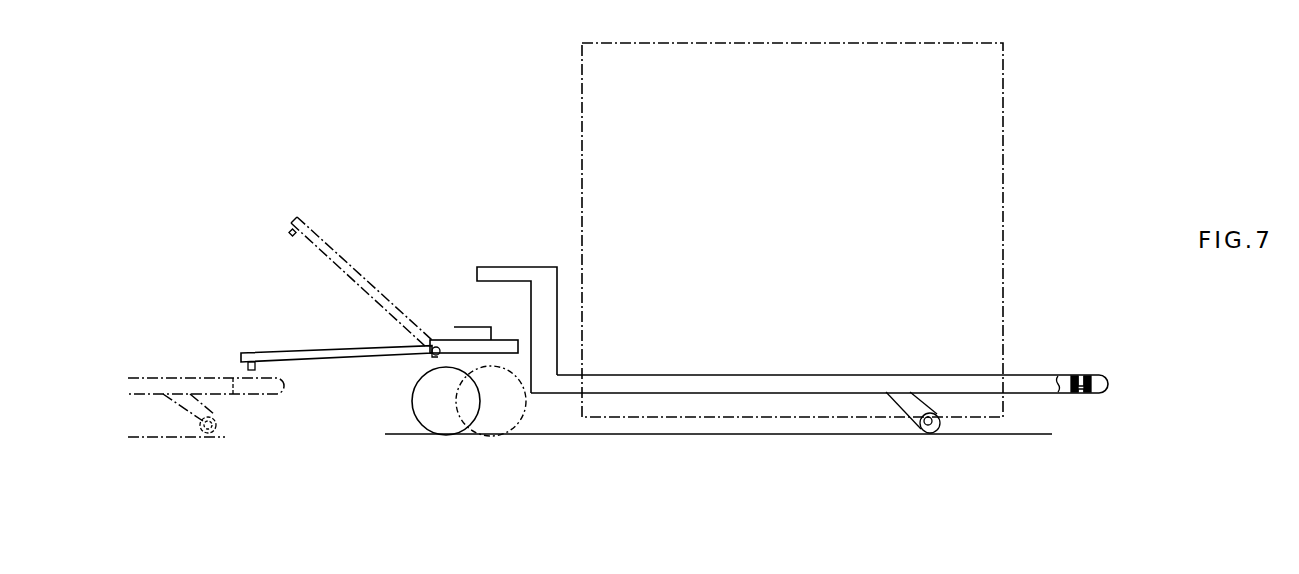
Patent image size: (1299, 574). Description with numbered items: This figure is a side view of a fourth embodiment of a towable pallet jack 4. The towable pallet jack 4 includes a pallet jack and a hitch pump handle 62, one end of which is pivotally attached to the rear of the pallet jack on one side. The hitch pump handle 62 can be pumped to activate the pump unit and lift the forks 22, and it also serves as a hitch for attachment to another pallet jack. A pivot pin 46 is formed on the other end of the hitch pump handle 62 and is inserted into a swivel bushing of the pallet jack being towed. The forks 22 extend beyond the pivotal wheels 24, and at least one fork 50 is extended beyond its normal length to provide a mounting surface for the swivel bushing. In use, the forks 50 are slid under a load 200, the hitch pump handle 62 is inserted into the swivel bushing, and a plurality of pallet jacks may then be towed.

The towable pallet jack 4 is at (425, 450).
The forks 22 is at (667, 383).
The pivotal wheels 24 is at (937, 430).
The pivot pin 46 is at (292, 229).
The fork 50 is at (253, 387).
The hitch pump handle 62 is at (305, 353).
The load 200 is at (1005, 67).